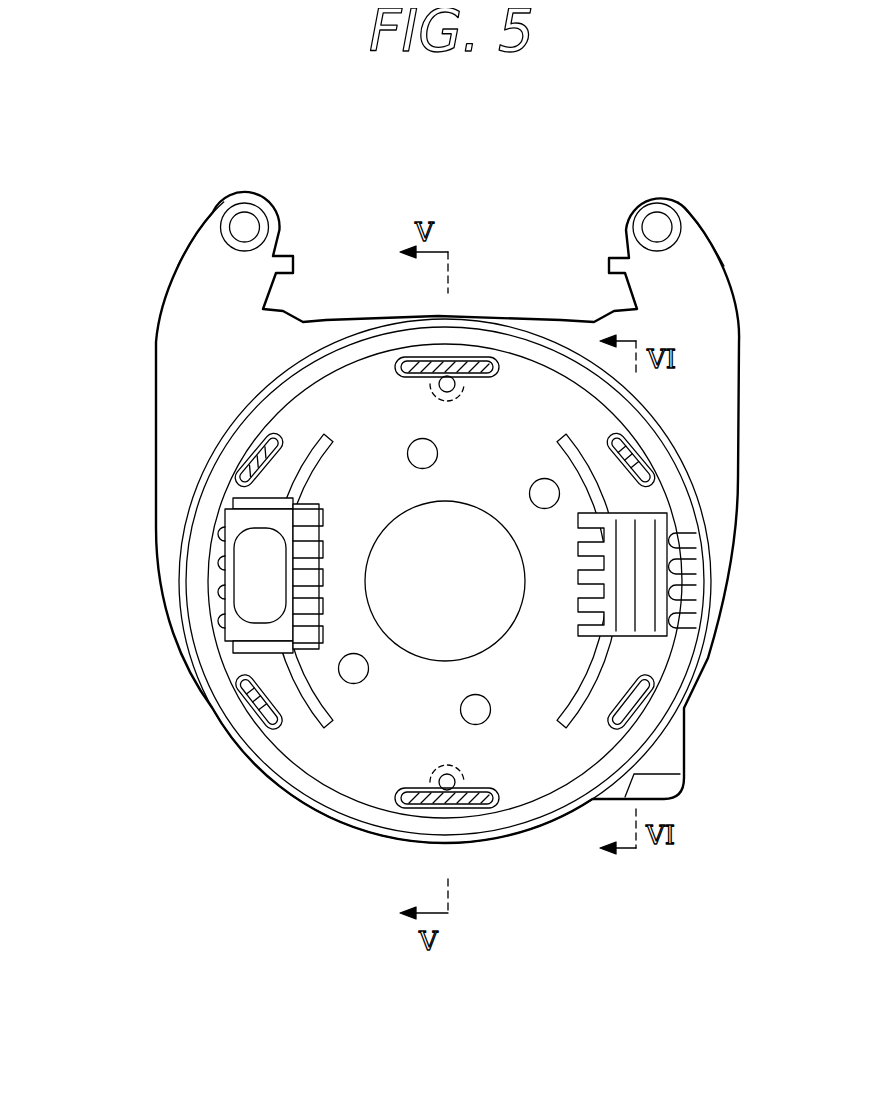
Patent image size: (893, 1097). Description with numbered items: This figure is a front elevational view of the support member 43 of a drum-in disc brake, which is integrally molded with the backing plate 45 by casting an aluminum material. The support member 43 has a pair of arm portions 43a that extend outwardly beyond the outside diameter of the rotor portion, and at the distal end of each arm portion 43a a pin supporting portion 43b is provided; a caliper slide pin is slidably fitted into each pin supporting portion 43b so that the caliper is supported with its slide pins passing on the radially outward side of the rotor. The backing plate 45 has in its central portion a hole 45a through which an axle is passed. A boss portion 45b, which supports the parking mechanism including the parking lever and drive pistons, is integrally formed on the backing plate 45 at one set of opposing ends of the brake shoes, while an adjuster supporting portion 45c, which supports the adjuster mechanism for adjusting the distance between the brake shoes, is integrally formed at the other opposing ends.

The support member 43 is at (417, 490).
The arm portion 43a is at (194, 268).
The pin supporting portion 43b is at (224, 195).
The backing plate 45 is at (438, 599).
The hole 45a is at (466, 646).
The boss portion 45b is at (636, 604).
The adjuster supporting portion 45c is at (215, 515).